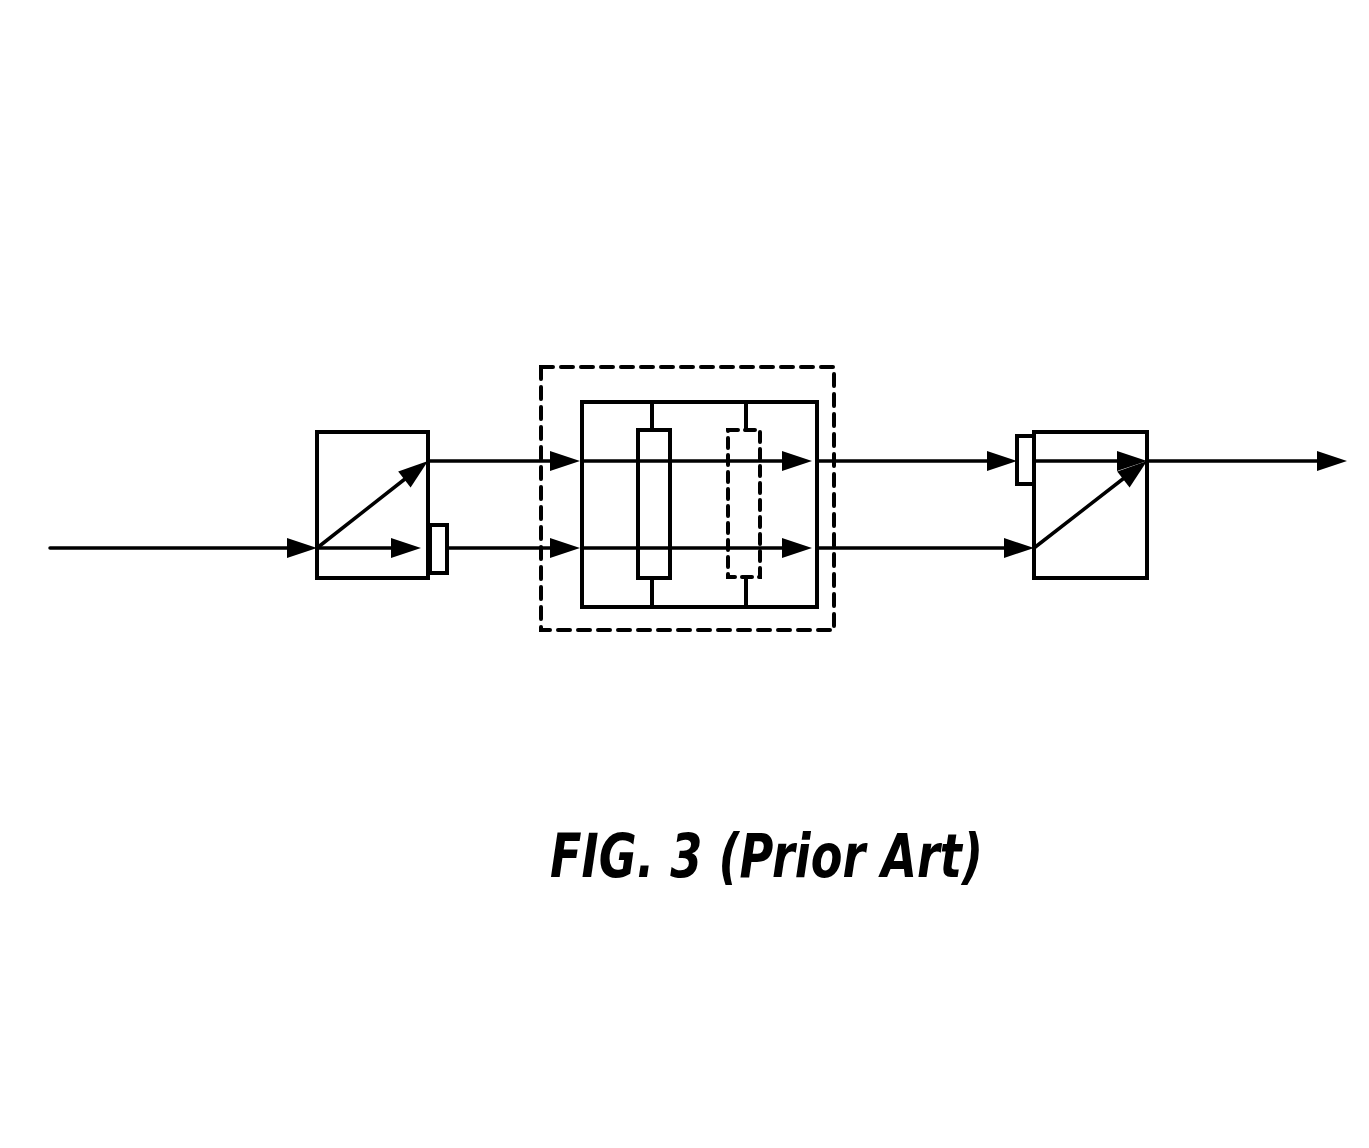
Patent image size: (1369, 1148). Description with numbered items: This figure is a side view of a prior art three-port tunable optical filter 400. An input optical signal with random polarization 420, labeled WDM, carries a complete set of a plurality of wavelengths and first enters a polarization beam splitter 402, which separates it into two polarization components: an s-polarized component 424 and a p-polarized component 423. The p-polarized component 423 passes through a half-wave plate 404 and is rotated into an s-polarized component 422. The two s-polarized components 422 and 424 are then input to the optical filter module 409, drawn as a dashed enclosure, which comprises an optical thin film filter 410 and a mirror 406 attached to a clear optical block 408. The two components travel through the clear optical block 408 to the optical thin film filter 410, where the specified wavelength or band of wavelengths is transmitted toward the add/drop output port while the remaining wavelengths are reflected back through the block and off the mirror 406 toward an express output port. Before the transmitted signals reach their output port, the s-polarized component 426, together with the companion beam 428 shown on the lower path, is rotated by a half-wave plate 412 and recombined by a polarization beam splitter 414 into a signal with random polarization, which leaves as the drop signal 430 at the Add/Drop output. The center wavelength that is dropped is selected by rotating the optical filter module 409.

The tunable optical filter 400 is at (948, 184).
The polarization beam splitter 402 is at (370, 428).
The half-wave plate 404 is at (437, 577).
The mirror 406 is at (640, 567).
The clear optical block 408 is at (700, 608).
The optical filter module 409 is at (685, 367).
The optical thin film filter 410 is at (757, 575).
The half-wave plate 412 is at (1025, 433).
The polarization beam splitter 414 is at (1092, 580).
The input optical signal with random polarization 420 is at (247, 547).
The s-polarized component 422 is at (507, 543).
The p-polarized component 423 is at (388, 550).
The s-polarized component 424 is at (540, 458).
The s-polarized component 426 is at (860, 461).
The filtered lower beam 428 is at (905, 547).
The drop signal 430 is at (1240, 465).